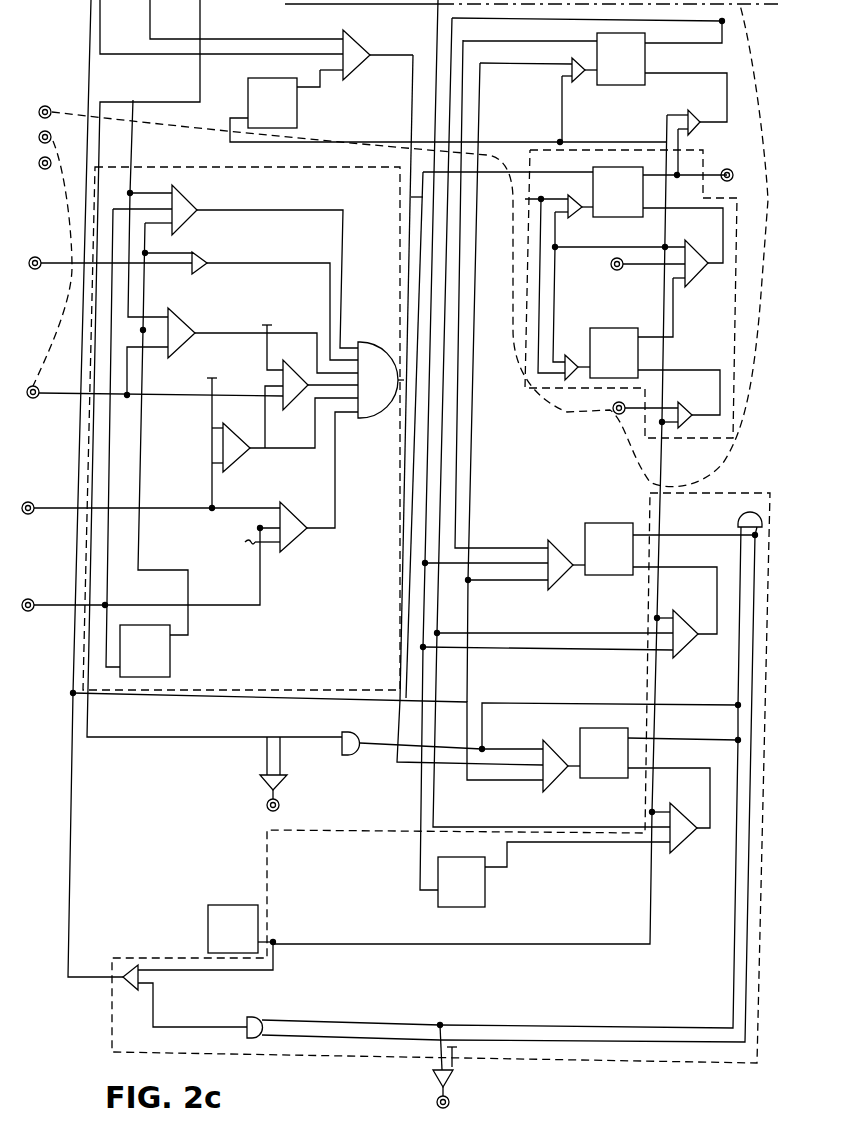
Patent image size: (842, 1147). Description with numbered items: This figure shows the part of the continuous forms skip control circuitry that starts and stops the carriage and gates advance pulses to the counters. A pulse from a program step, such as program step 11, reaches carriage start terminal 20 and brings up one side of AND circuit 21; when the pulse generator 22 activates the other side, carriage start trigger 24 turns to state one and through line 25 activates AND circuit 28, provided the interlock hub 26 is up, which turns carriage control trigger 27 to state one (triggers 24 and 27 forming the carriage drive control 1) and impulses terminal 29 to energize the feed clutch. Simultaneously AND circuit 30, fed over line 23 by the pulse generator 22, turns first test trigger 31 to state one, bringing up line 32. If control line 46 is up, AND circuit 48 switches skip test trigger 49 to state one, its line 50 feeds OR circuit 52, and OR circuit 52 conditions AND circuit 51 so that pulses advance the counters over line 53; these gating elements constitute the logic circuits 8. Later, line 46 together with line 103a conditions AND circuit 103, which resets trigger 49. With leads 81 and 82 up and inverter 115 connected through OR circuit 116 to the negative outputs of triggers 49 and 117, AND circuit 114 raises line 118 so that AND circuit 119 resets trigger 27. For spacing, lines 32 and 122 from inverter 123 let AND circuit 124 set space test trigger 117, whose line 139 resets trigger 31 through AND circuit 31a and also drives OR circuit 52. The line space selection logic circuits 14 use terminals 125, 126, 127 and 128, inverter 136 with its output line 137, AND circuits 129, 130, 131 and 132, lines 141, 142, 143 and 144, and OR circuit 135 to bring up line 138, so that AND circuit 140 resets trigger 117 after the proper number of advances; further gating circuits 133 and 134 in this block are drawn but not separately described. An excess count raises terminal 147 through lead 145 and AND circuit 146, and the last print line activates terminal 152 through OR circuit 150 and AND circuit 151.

The carriage drive control 1 is at (700, 442).
The logic circuits 8 is at (712, 494).
The program step 11 is at (398, 246).
The line space selection pluggable logic circuits 14 is at (320, 675).
The carriage start terminal 20 is at (616, 414).
The AND circuit 21 is at (686, 409).
The pulse generator 22 is at (208, 914).
The line 23 is at (662, 457).
The carriage start trigger 24 is at (599, 328).
The line 25 is at (675, 316).
The hub 26 is at (611, 265).
The carriage control trigger 27 is at (596, 167).
The AND circuit 28 is at (683, 248).
The terminal 29 is at (729, 170).
The AND circuit 30 is at (706, 108).
The first test trigger 31 is at (600, 35).
The AND circuit 31a is at (578, 80).
The line 32 is at (559, 18).
The control line 46 is at (438, 16).
The AND circuit 48 is at (692, 650).
The skip test trigger 49 is at (616, 574).
The line 50 is at (692, 534).
The AND circuit 51 is at (137, 990).
The OR circuit 52 is at (232, 1017).
The line 53 is at (91, 14).
The lead 81 is at (313, 38).
The lead 82 is at (244, 54).
The AND circuit 103 is at (561, 584).
The line 103a is at (505, 40).
The AND circuit 114 is at (352, 40).
The inverter 115 is at (297, 108).
The OR circuit 116 is at (744, 522).
The space test trigger 117 is at (582, 728).
The line 118 is at (414, 111).
The AND circuit 119 is at (574, 220).
The line 122 is at (605, 844).
The inverter 123 is at (485, 886).
The AND circuit 124 is at (690, 843).
The terminal 125 is at (45, 250).
The terminal 126 is at (31, 371).
The terminal 127 is at (30, 503).
The terminal 128 is at (27, 600).
The AND circuit 129 is at (203, 256).
The AND circuit 130 is at (183, 198).
The AND circuit 131 is at (178, 318).
The AND circuit 132 is at (224, 435).
The amplifier 133 is at (300, 404).
The amplifier 134 is at (285, 508).
The OR circuit 135 is at (364, 350).
The inverter 136 is at (170, 660).
The line 137 is at (138, 556).
The line 138 is at (397, 711).
The line 139 is at (676, 704).
The AND circuit 140 is at (556, 780).
The line 141 is at (137, 77).
The line 142 is at (212, 405).
The line 143 is at (270, 328).
The line 144 is at (255, 546).
The lead 145 is at (455, 1064).
The AND circuit 146 is at (438, 1073).
The terminal 147 is at (449, 1102).
The OR circuit 150 is at (351, 733).
The AND circuit 151 is at (280, 780).
The terminal 152 is at (266, 806).